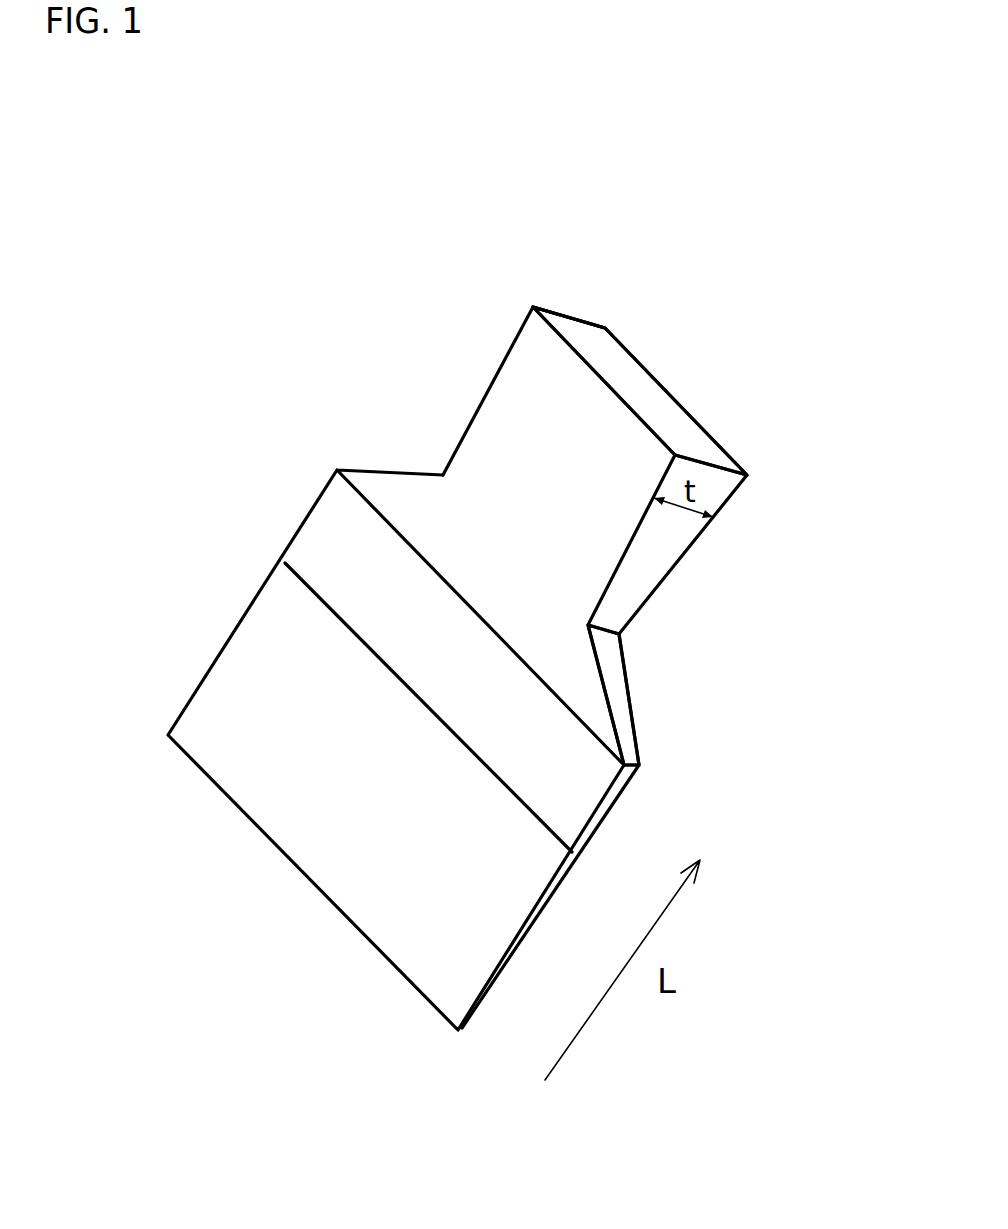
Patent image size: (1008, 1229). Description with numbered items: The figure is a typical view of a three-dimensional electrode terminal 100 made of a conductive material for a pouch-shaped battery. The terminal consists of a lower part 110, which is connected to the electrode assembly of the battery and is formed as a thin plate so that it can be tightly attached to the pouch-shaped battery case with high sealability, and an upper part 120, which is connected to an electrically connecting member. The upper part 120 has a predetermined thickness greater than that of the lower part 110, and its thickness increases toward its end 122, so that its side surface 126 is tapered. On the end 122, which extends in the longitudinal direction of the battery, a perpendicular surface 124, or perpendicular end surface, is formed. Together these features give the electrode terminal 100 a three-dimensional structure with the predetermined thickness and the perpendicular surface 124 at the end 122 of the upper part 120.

The three-dimensional electrode terminal 100 is at (466, 577).
The lower part 110 is at (356, 750).
The upper part 120 is at (550, 579).
The end 122 is at (612, 272).
The perpendicular surface 124 is at (647, 392).
The side surface 126 is at (615, 688).